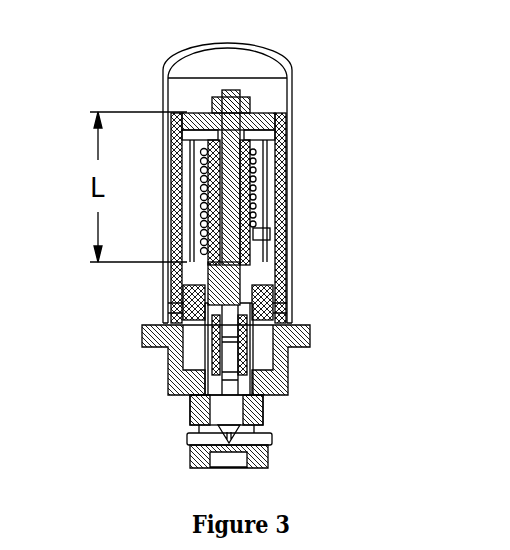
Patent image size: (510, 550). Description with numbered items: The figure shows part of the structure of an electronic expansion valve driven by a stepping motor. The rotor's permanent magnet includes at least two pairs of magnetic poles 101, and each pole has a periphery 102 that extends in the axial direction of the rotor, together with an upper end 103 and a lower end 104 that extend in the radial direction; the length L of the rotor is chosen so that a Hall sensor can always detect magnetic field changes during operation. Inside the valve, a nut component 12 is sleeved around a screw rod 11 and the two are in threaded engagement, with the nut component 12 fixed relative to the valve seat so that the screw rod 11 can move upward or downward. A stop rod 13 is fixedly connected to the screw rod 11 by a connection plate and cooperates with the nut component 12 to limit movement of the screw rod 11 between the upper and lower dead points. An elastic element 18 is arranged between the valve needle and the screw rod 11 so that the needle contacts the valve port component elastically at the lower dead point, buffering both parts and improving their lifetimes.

The screw rod 11 is at (225, 113).
The nut component 12 is at (250, 185).
The stop rod 13 is at (263, 211).
The elastic element 18 is at (272, 321).
The magnetic poles 101 is at (165, 143).
The periphery 102 is at (292, 137).
The upper end 103 is at (183, 113).
The lower end 104 is at (163, 265).